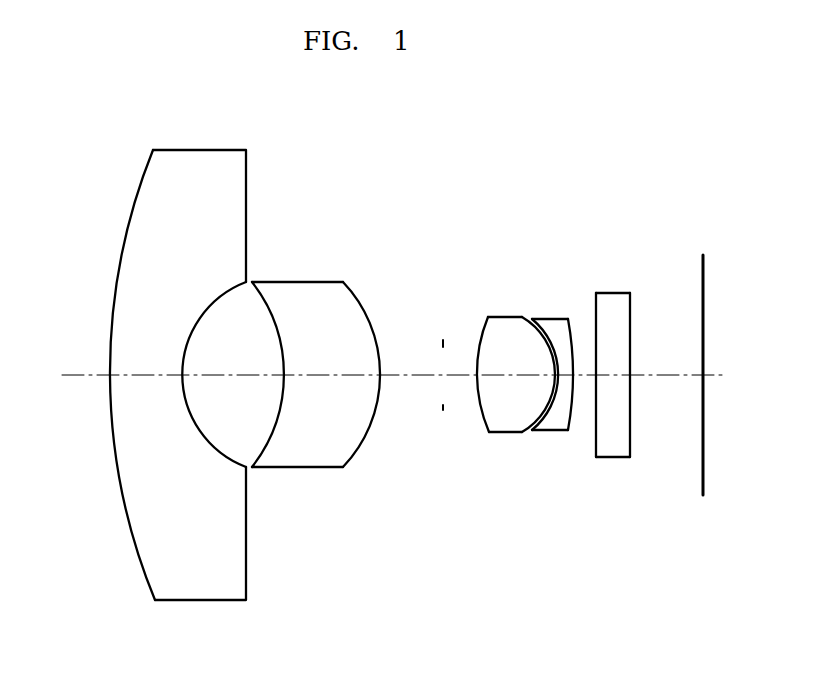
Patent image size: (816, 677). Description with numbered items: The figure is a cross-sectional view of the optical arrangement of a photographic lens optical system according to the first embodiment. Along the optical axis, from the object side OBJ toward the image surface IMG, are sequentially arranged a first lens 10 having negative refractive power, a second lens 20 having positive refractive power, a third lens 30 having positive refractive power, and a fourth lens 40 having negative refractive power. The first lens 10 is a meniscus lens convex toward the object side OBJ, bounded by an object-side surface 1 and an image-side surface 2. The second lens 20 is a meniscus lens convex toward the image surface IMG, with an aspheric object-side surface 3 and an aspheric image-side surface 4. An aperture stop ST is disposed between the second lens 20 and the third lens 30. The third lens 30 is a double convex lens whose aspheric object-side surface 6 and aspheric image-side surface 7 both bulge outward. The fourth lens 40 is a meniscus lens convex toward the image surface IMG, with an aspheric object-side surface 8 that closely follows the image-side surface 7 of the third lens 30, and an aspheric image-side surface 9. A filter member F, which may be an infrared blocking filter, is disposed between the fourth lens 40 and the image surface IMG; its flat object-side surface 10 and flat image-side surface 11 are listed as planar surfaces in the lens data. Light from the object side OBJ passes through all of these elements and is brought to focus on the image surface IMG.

The object-side surface of first lens 1 is at (132, 535).
The image-side surface of first lens 2 is at (213, 441).
The object-side surface of second lens 3 is at (262, 437).
The image-side surface of second lens 4 is at (368, 443).
The object-side surface of third lens 6 is at (481, 412).
The image-side surface of third lens 7 is at (527, 432).
The object-side surface of fourth lens 8 is at (548, 412).
The image-side surface of fourth lens 9 is at (570, 415).
The first lens 10 is at (354, 350).
The image-side surface of filter member 11 is at (632, 437).
The second lens 20 is at (316, 385).
The third lens 30 is at (511, 377).
The fourth lens 40 is at (559, 377).
The aperture stop ST is at (443, 410).
The filter member F is at (627, 382).
The image surface IMG is at (703, 282).
The object side OBJ is at (368, 376).